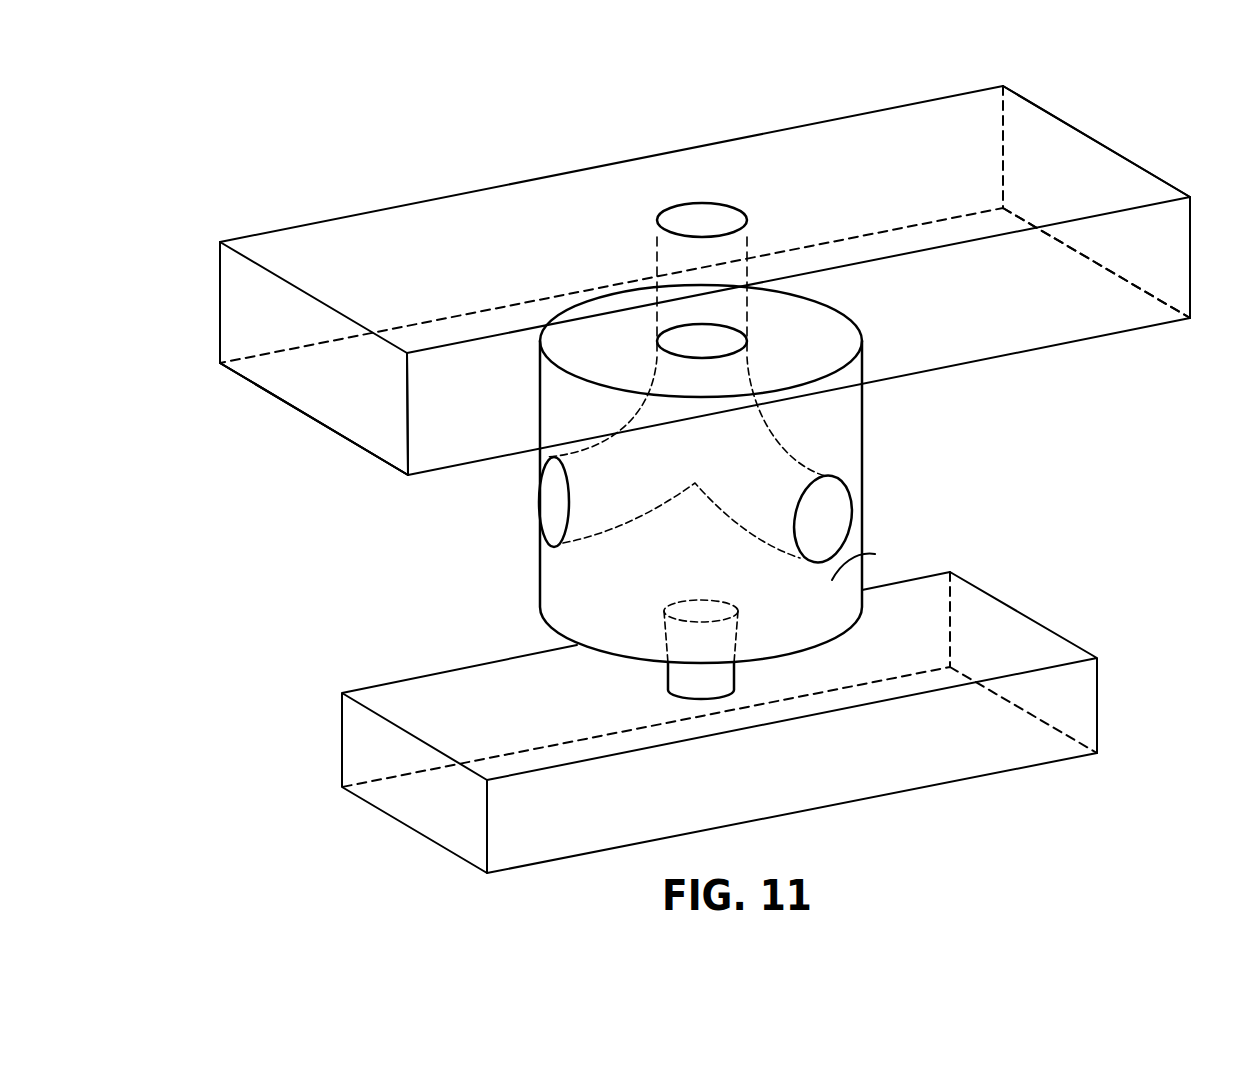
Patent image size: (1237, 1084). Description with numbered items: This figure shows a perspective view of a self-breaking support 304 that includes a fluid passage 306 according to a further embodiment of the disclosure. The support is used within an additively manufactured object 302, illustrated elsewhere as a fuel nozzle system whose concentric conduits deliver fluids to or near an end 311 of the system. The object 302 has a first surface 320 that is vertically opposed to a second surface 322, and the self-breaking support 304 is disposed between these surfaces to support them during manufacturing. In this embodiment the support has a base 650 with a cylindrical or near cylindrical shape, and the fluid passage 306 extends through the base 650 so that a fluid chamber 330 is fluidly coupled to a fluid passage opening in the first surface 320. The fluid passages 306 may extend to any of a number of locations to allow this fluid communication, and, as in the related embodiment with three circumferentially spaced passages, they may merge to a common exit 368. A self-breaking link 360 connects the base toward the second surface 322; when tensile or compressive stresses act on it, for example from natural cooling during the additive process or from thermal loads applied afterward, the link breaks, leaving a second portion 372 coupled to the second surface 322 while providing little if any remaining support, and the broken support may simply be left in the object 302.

The object 302 is at (462, 152).
The end 311 is at (1084, 189).
The second portion 372 is at (294, 367).
The first surface 320 is at (345, 438).
The self-breaking support 304 is at (882, 433).
The common exit 368 is at (720, 347).
The fluid passage 306 is at (558, 500).
The base 650 is at (875, 554).
The fluid chamber 330 is at (428, 575).
The self-breaking link 360 is at (688, 683).
The second surface 322 is at (433, 713).